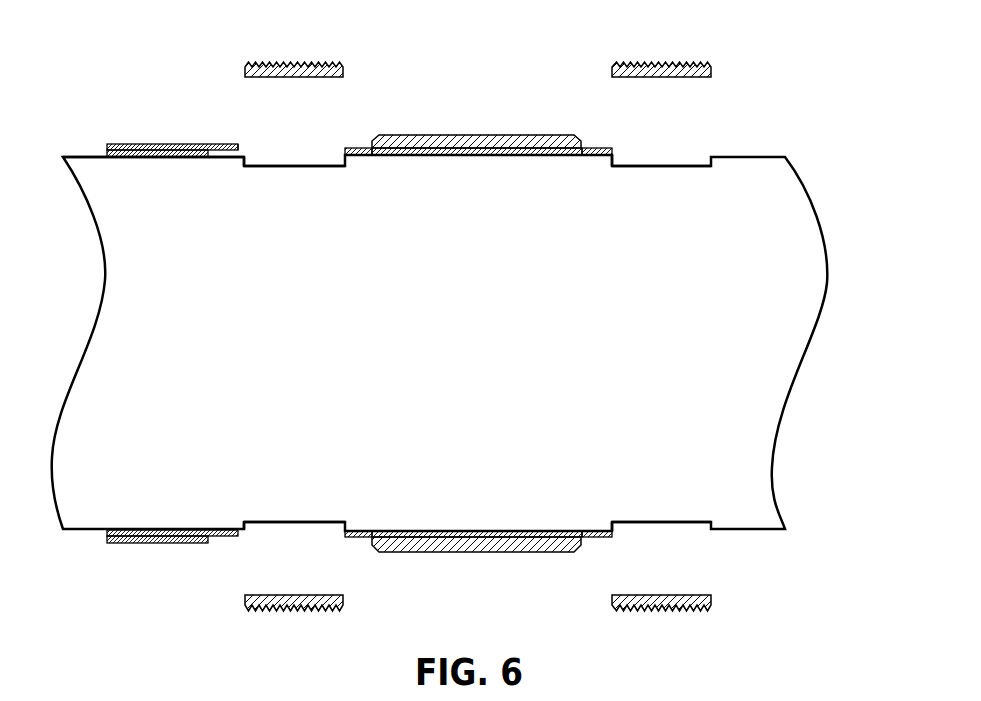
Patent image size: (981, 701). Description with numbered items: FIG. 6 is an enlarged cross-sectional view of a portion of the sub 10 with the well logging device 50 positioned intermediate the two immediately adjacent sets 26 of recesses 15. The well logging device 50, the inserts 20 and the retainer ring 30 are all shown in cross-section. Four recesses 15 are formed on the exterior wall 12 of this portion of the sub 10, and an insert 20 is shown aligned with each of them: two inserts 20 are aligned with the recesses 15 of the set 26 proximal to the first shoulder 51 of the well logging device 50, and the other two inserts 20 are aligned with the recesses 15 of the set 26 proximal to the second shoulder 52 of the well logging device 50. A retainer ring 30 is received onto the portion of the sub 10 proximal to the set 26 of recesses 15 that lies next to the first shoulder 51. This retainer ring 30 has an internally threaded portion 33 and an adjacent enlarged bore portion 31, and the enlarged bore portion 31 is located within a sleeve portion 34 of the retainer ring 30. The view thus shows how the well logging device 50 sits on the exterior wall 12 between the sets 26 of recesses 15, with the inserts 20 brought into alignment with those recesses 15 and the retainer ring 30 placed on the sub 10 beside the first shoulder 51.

The sub 10 is at (84, 532).
The exterior wall 12 is at (80, 153).
The recesses 15 is at (311, 160).
The inserts 20 is at (305, 60).
The sets of recesses 26 is at (263, 168).
The retainer ring 30 is at (237, 143).
The enlarged bore portion 31 is at (248, 145).
The internally threaded portion 33 is at (161, 172).
The sleeve portion 34 is at (223, 143).
The well logging device 50 is at (480, 135).
The first shoulder 51 is at (357, 147).
The second shoulder 52 is at (593, 147).